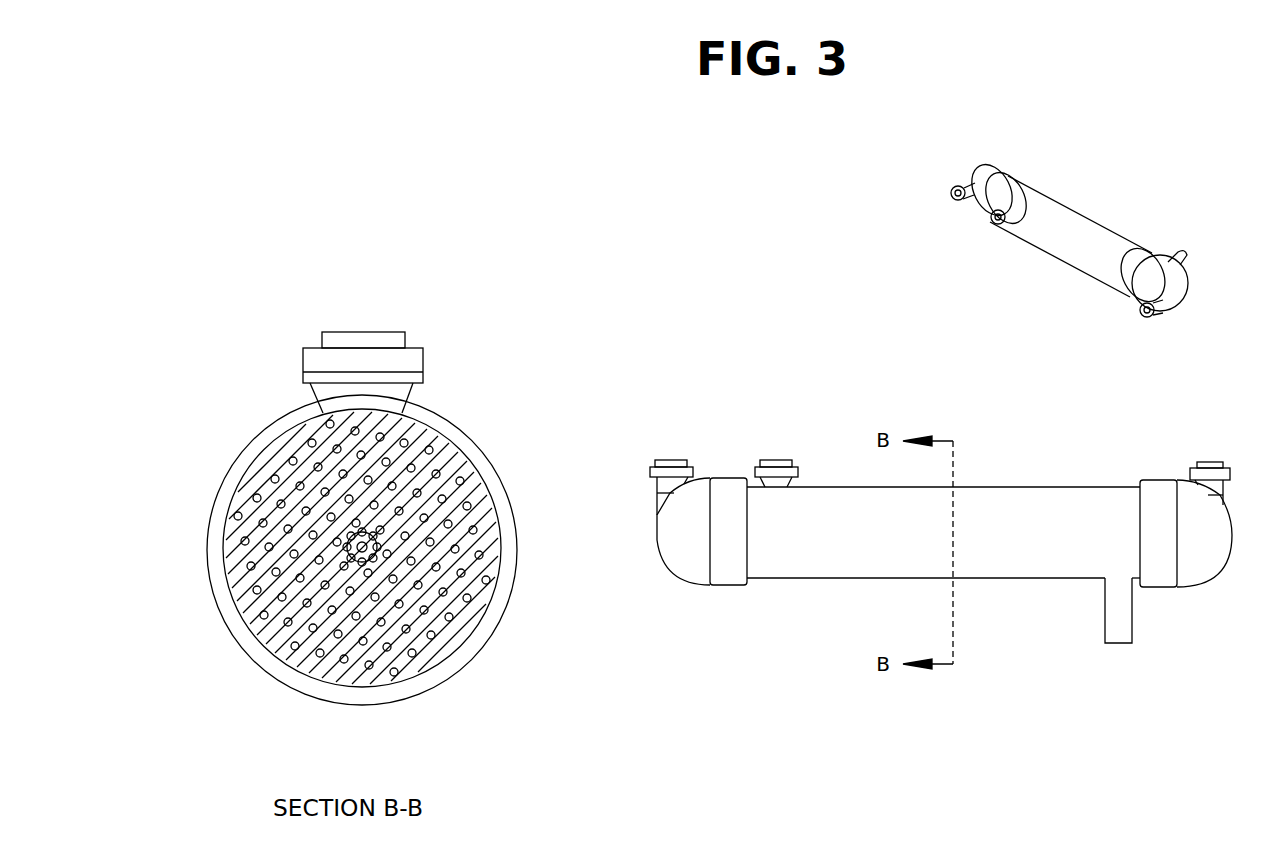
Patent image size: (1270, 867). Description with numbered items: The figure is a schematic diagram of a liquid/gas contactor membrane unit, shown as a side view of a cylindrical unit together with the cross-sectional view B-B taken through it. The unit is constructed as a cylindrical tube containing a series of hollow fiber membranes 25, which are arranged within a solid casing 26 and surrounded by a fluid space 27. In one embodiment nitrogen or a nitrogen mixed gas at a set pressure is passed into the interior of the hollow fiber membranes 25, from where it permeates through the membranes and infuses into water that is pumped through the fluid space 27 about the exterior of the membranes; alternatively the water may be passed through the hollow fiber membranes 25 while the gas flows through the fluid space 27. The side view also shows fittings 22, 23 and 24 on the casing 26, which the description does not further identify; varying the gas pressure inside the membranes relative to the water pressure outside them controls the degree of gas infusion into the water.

The inlet port fitting 22 is at (668, 452).
The port fitting 23 is at (775, 452).
The outlet port fitting 24 is at (1210, 455).
The hollow fiber membranes 25 is at (435, 636).
The solid casing 26 is at (497, 598).
The fluid space 27 is at (410, 655).